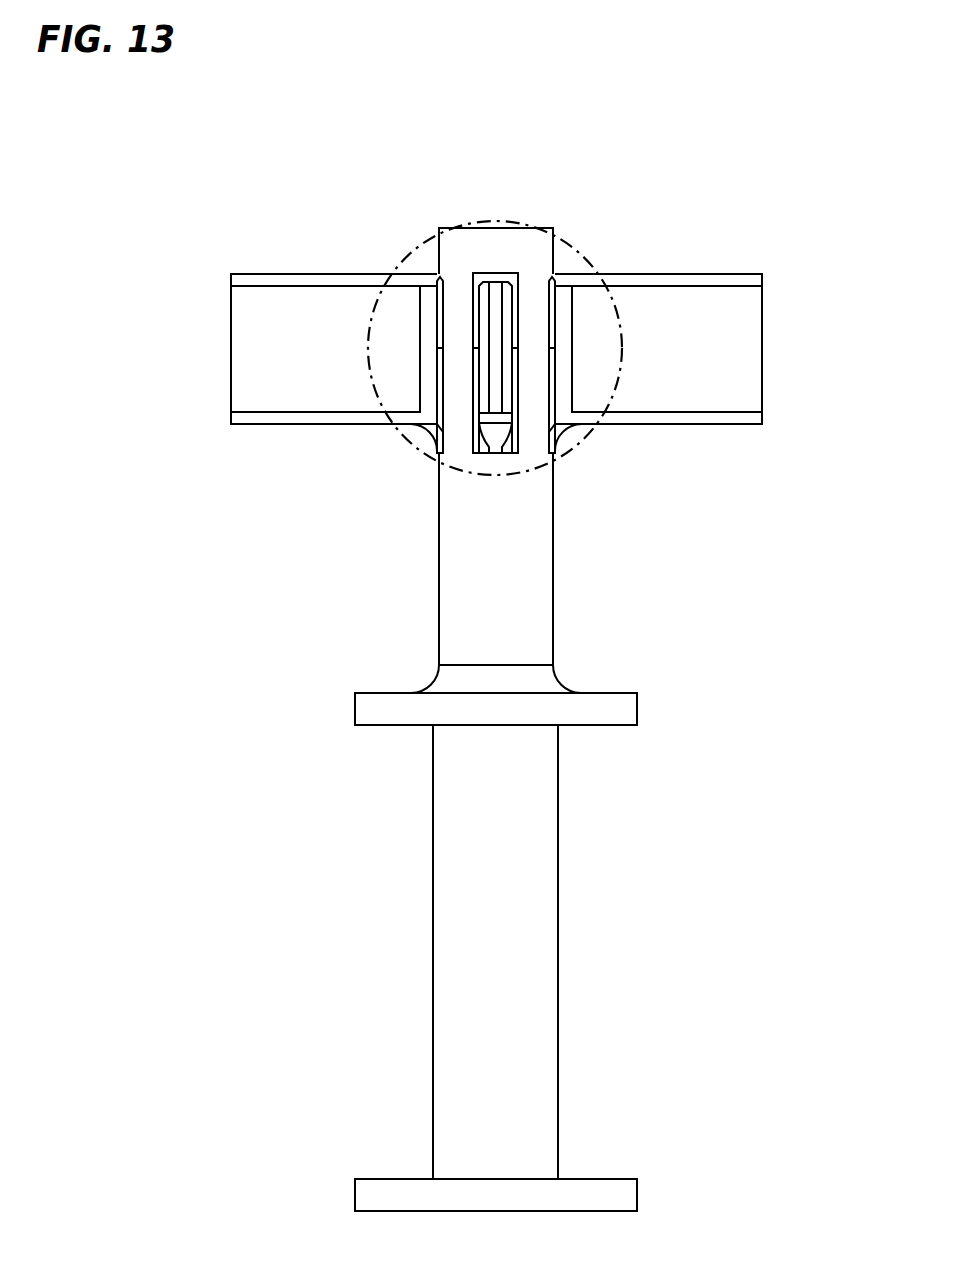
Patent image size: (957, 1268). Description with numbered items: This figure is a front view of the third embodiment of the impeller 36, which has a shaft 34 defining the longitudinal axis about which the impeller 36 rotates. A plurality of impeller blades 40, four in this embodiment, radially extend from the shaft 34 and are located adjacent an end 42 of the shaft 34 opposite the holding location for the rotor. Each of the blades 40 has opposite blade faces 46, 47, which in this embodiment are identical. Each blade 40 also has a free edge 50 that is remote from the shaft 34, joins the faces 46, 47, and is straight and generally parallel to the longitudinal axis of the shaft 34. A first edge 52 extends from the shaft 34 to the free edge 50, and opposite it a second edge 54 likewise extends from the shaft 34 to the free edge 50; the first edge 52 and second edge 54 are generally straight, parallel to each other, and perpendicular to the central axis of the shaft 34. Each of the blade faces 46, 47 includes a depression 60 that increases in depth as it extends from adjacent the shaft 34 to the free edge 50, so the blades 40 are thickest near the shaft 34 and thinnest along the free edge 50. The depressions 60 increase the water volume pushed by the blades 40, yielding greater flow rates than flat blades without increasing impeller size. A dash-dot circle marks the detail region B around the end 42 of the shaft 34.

The impeller 36 is at (678, 84).
The impeller blades 40 is at (729, 242).
The end of the shaft 42 is at (455, 228).
The blade face 46 is at (245, 340).
The blade face 47 is at (742, 393).
The free edge 50 is at (231, 367).
The first edge 52 is at (331, 273).
The second edge 54 is at (307, 425).
The depression 60 is at (270, 307).
The detail region B is at (497, 223).
The shaft 34 is at (553, 590).